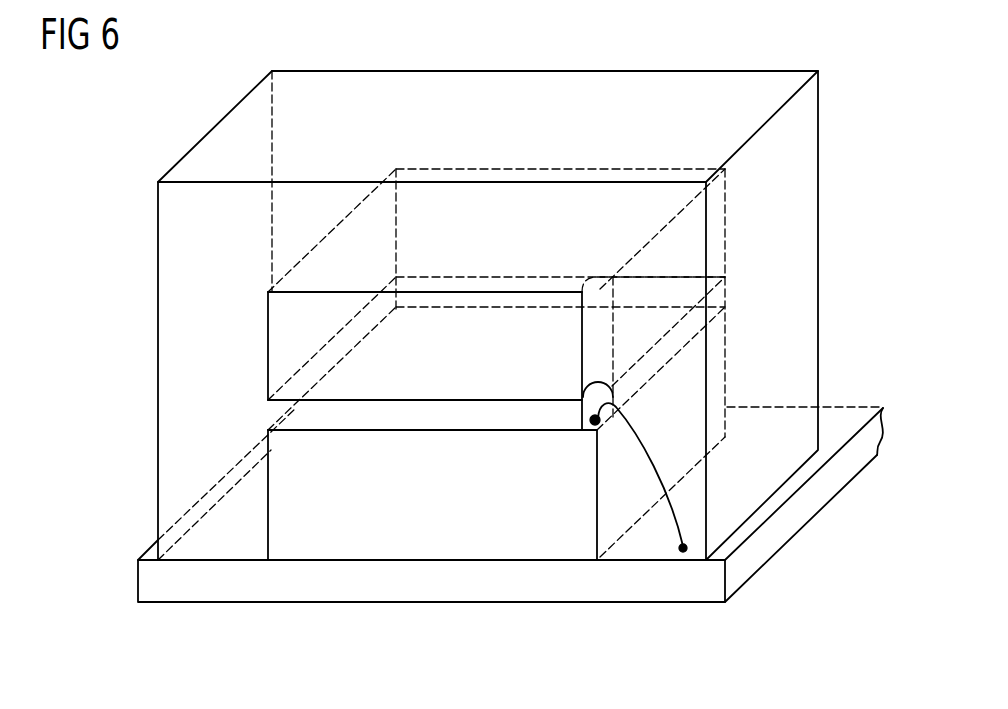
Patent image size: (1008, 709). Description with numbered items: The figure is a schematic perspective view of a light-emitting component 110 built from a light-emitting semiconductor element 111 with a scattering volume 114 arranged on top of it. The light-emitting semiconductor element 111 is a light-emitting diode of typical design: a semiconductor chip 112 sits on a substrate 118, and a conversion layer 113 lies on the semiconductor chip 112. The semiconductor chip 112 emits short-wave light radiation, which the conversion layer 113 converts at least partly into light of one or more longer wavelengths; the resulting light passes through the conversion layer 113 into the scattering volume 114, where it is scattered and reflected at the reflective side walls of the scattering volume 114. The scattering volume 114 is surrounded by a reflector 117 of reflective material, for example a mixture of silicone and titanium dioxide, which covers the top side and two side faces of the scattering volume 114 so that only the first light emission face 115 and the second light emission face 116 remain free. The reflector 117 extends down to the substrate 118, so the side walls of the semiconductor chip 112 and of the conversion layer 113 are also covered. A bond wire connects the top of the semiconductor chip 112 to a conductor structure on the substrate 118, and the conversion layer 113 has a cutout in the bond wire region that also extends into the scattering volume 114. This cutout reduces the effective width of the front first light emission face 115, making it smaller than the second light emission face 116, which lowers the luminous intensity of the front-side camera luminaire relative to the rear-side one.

The light-emitting component 110 is at (433, 283).
The light-emitting semiconductor element 111 is at (647, 528).
The semiconductor chip 112 is at (281, 481).
The conversion layer 113 is at (275, 414).
The scattering volume 114 is at (287, 345).
The first light emission face 115 is at (316, 333).
The second light emission face 116 is at (672, 251).
The reflector 117 is at (678, 86).
The substrate 118 is at (178, 587).